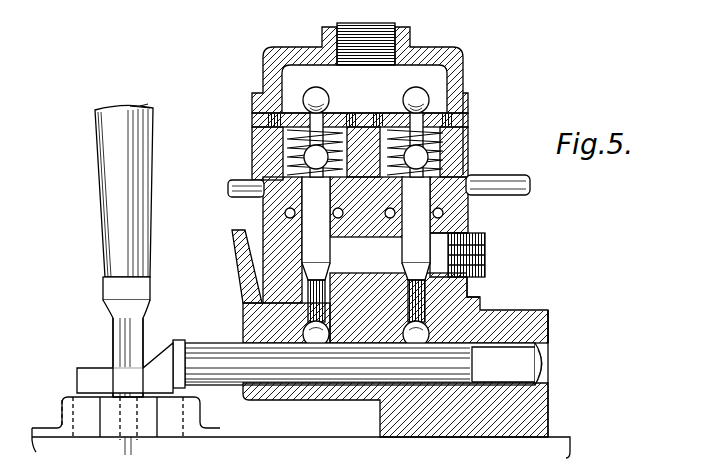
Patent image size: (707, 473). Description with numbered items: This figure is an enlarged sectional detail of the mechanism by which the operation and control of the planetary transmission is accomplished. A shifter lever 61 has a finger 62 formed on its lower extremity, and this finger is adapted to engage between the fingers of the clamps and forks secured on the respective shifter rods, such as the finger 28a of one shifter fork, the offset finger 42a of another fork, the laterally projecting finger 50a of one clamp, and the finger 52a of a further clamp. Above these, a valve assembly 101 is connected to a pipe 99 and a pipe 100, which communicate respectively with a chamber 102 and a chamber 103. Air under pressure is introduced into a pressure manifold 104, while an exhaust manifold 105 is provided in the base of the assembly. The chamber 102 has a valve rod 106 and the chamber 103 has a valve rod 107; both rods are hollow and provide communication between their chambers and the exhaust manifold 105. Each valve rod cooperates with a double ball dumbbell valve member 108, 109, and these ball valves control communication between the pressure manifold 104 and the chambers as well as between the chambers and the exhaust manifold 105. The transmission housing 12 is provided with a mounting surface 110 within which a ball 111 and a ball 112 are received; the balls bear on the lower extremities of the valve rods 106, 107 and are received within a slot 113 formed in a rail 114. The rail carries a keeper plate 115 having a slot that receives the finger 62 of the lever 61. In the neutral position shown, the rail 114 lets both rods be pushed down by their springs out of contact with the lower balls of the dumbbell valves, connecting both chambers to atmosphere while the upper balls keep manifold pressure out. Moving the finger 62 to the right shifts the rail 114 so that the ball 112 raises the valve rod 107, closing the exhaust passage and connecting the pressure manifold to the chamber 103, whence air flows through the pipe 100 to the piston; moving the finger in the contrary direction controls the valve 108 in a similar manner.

The transmission housing 12 is at (292, 395).
The finger 28a is at (136, 437).
The finger 42a is at (119, 437).
The finger 50a is at (175, 433).
The finger 52a is at (86, 433).
The shifter lever 61 is at (101, 178).
The finger 62 is at (113, 334).
The pipe 99 is at (512, 177).
The pipe 100 is at (228, 188).
The valve assembly 101 is at (258, 210).
The chamber 102 is at (465, 160).
The chamber 103 is at (292, 150).
The pressure manifold 104 is at (322, 66).
The exhaust manifold 105 is at (478, 233).
The valve rod 106 is at (478, 290).
The valve rod 107 is at (257, 290).
The double ball dumbbell valve member 108 is at (436, 82).
The double ball dumbbell valve member 109 is at (294, 81).
The mounting surface 110 is at (275, 312).
The ball 111 is at (482, 309).
The ball 112 is at (300, 330).
The slot 113 is at (365, 345).
The rail 114 is at (530, 356).
The keeper plate 115 is at (77, 380).